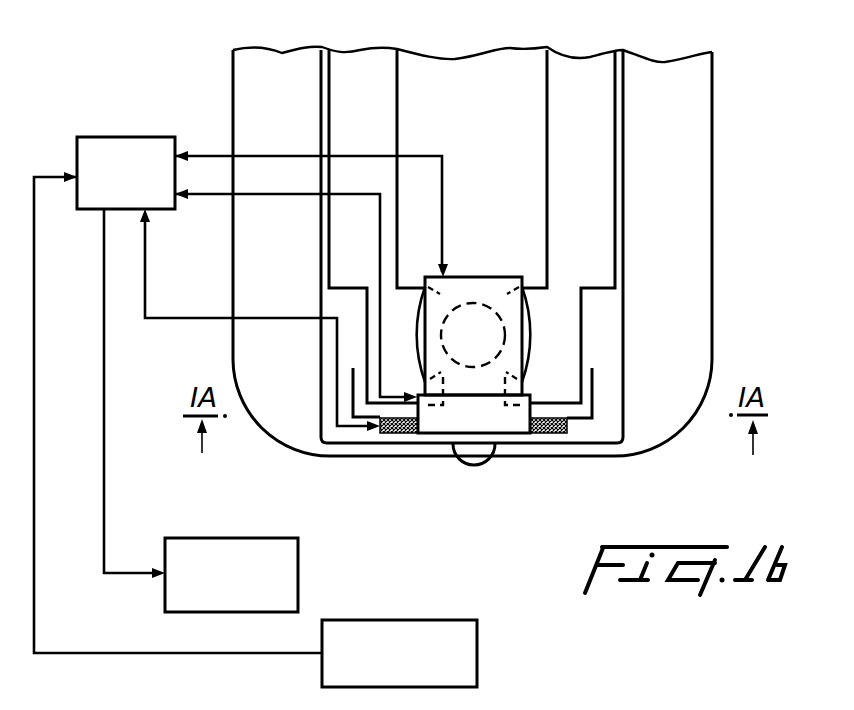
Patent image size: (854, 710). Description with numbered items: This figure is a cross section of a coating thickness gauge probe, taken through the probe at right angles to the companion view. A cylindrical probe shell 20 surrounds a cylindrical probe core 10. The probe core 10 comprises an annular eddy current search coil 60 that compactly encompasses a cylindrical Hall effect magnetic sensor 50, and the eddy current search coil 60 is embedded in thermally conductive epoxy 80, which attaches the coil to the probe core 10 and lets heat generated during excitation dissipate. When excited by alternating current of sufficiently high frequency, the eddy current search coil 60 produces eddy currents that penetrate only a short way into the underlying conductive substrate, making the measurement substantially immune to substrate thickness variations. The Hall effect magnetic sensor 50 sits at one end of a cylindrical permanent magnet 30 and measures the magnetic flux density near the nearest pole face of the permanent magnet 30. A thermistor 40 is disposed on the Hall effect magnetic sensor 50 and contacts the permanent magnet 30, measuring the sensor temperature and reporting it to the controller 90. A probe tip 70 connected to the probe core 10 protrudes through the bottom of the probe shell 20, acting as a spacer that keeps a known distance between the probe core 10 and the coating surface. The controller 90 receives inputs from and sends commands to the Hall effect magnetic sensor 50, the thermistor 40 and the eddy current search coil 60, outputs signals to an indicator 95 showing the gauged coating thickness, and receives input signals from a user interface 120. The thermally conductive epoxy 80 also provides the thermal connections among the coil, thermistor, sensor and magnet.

The probe core 10 is at (625, 108).
The probe shell 20 is at (712, 128).
The permanent magnet 30 is at (537, 247).
The thermistor 40 is at (512, 312).
The Hall effect magnetic sensor 50 is at (507, 418).
The eddy current search coil 60 is at (563, 428).
The probe tip 70 is at (475, 455).
The thermally conductive epoxy 80 is at (347, 433).
The controller 90 is at (110, 140).
The indicator 95 is at (290, 563).
The user interface 120 is at (467, 645).